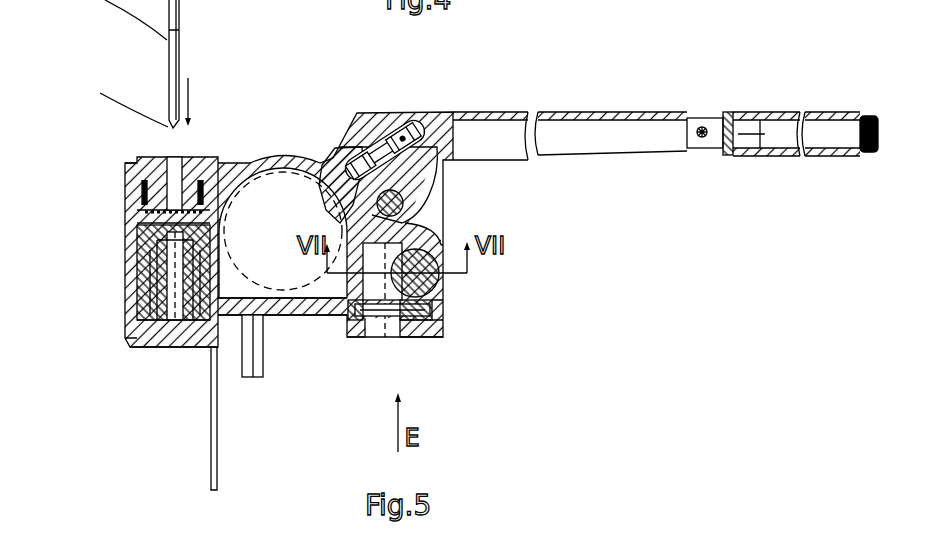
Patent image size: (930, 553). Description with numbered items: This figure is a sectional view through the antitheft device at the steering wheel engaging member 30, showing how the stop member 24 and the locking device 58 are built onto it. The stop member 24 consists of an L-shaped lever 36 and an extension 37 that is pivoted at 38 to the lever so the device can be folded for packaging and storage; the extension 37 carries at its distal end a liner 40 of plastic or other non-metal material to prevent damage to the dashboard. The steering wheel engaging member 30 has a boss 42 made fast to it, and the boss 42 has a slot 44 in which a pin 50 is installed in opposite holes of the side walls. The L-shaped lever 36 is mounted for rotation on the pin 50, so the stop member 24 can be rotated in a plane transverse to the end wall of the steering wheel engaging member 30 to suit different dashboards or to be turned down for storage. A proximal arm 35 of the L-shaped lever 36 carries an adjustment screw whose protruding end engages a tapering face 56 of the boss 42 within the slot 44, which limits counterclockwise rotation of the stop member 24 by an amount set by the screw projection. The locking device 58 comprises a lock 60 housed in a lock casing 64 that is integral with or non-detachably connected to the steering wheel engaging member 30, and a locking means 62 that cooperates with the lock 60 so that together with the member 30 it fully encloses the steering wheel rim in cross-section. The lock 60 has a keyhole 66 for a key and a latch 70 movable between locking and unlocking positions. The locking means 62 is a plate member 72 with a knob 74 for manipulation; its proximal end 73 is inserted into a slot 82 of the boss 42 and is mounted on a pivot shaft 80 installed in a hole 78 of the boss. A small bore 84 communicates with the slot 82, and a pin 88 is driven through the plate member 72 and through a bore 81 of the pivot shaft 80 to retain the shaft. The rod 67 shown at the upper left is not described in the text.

The stop member 24 is at (706, 86).
The steering wheel engaging member 30 is at (287, 152).
The proximal arm 35 is at (440, 163).
The L-shaped lever 36 is at (458, 116).
The extension 37 is at (795, 113).
The pivot 38 is at (705, 130).
The liner 40 is at (875, 114).
The boss 42 is at (448, 281).
The slot 44 is at (430, 193).
The pin 50 is at (405, 203).
The tapering face 56 is at (345, 148).
The locking device 58 is at (214, 336).
The lock 60 is at (143, 281).
The locking means 62 is at (372, 343).
The lock casing 64 is at (130, 185).
The keyhole 66 is at (182, 165).
The rod 67 is at (166, 124).
The latch 70 is at (186, 330).
The plate member 72 is at (278, 313).
The proximal end 73 is at (443, 340).
The knob 74 is at (242, 366).
The hole 78 is at (402, 345).
The pivot shaft 80 is at (388, 343).
The bore 81 is at (347, 327).
The slot 82 is at (443, 298).
The small bore 84 is at (443, 310).
The pin 88 is at (443, 325).